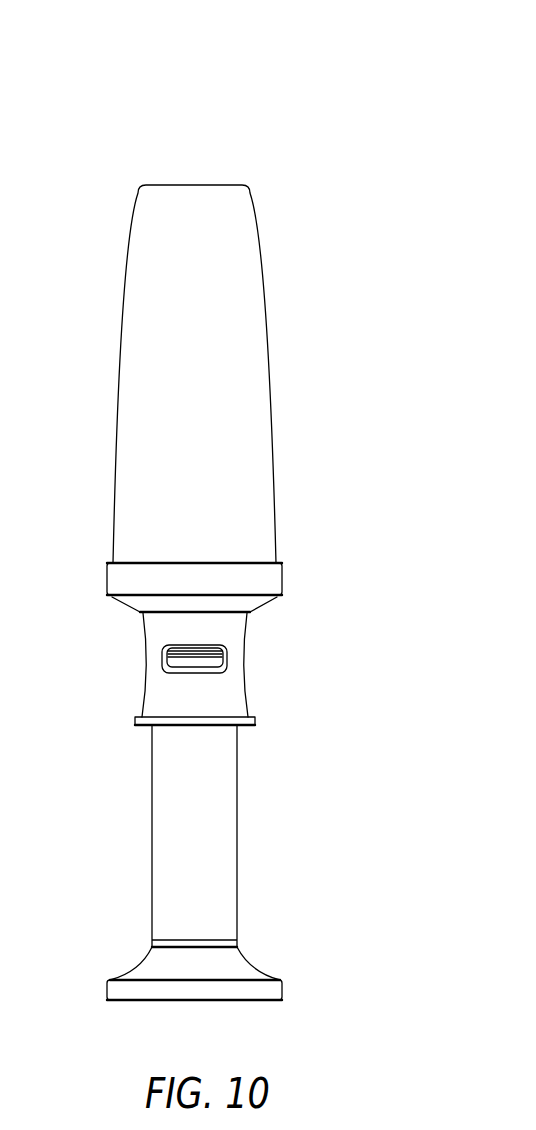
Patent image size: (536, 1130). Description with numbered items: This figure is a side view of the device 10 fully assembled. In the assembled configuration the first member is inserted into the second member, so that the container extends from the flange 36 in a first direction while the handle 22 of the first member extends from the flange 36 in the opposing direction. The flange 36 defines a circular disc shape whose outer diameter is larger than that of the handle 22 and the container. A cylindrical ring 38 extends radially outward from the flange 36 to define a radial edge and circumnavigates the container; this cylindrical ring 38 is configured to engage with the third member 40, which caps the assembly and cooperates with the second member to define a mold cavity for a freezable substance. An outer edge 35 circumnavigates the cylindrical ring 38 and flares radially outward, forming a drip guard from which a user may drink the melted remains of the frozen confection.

The device 10 is at (350, 84).
The third member 40 is at (243, 397).
The outer edge 35 is at (283, 584).
The cylindrical ring 38 is at (262, 609).
The flange 36 is at (143, 652).
The handle 22 is at (237, 835).